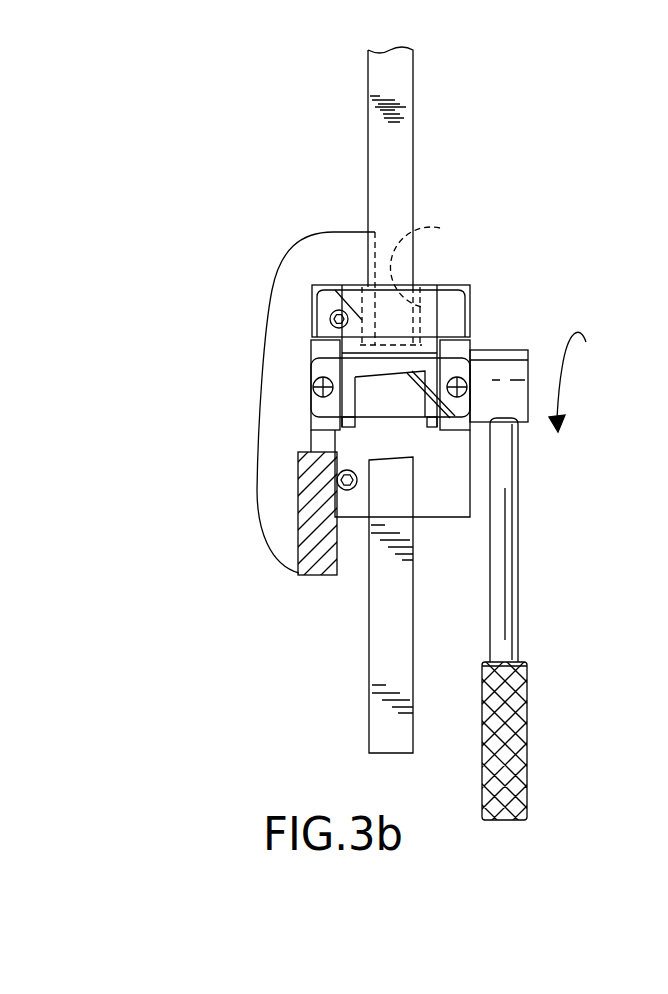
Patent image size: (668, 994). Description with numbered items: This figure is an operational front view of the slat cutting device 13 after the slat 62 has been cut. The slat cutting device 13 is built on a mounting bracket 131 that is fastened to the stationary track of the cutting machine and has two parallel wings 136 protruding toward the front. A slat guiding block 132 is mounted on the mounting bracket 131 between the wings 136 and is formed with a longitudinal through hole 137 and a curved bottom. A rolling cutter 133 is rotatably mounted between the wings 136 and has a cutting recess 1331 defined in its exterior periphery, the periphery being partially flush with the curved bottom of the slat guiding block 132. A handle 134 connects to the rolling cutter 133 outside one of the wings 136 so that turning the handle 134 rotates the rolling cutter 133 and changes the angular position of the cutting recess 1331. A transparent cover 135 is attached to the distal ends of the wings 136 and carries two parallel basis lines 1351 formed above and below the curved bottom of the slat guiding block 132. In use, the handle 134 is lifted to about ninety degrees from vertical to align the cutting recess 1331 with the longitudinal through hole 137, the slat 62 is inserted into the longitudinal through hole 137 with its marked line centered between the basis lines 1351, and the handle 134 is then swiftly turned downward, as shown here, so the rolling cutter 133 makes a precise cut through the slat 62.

The slat cutting device 13 is at (497, 256).
The slat 62 is at (390, 148).
The mounting bracket 131 is at (428, 495).
The slat guiding block 132 is at (430, 315).
The rolling cutter 133 is at (432, 427).
The handle 134 is at (512, 707).
The transparent cover 135 is at (327, 318).
The wings 136 is at (327, 426).
The longitudinal through hole 137 is at (440, 228).
The cutting recess 1331 is at (355, 426).
The basis lines 1351 is at (326, 360).